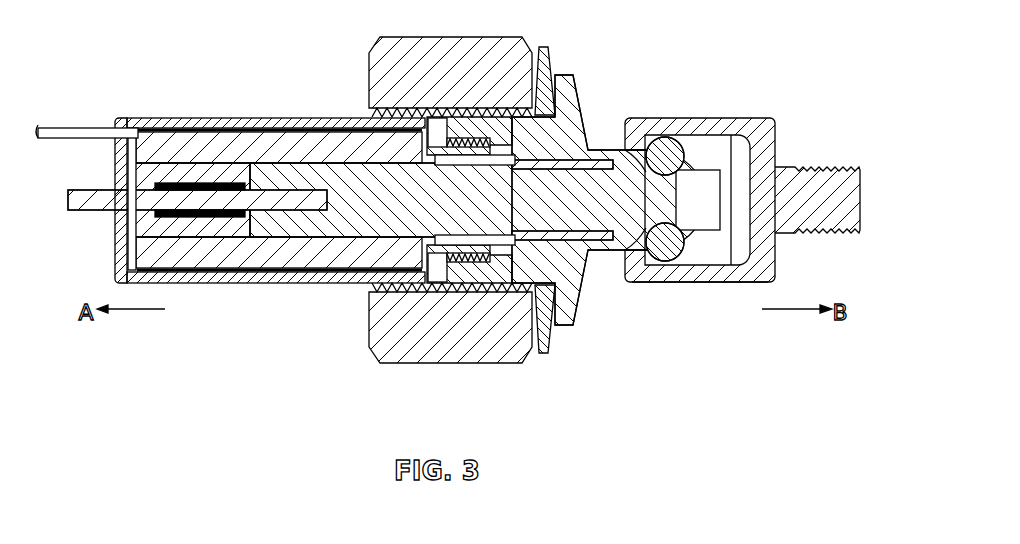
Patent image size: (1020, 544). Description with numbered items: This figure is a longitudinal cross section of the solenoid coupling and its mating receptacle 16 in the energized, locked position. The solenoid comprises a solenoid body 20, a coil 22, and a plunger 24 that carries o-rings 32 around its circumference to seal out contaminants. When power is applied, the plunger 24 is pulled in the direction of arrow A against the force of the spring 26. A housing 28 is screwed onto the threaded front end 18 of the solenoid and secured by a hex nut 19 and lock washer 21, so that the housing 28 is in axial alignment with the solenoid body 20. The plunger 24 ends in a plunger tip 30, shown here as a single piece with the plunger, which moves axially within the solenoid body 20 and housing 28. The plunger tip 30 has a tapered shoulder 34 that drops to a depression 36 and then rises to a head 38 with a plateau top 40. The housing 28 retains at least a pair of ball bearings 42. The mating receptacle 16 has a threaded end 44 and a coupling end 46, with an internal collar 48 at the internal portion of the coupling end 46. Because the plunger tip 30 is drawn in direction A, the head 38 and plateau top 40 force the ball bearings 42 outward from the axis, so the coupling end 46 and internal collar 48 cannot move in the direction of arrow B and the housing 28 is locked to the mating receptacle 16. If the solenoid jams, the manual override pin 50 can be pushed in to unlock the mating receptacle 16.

The mating receptacle 16 is at (719, 290).
The threaded front end 18 is at (497, 142).
The hex nut 19 is at (410, 47).
The solenoid body 20 is at (265, 118).
The lock washer 21 is at (543, 47).
The coil 22 is at (217, 262).
The plunger 24 is at (370, 228).
The spring 26 is at (202, 183).
The housing 28 is at (565, 75).
The plunger tip 30 is at (557, 183).
The o-rings 32 is at (113, 247).
The tapered shoulder 34 is at (630, 245).
The depression 36 is at (668, 250).
The head 38 is at (700, 155).
The plateau top 40 is at (768, 137).
The ball bearings 42 is at (672, 250).
The threaded end 44 is at (853, 163).
The coupling end 46 is at (661, 121).
The internal collar 48 is at (633, 140).
The manual override pin 50 is at (80, 200).